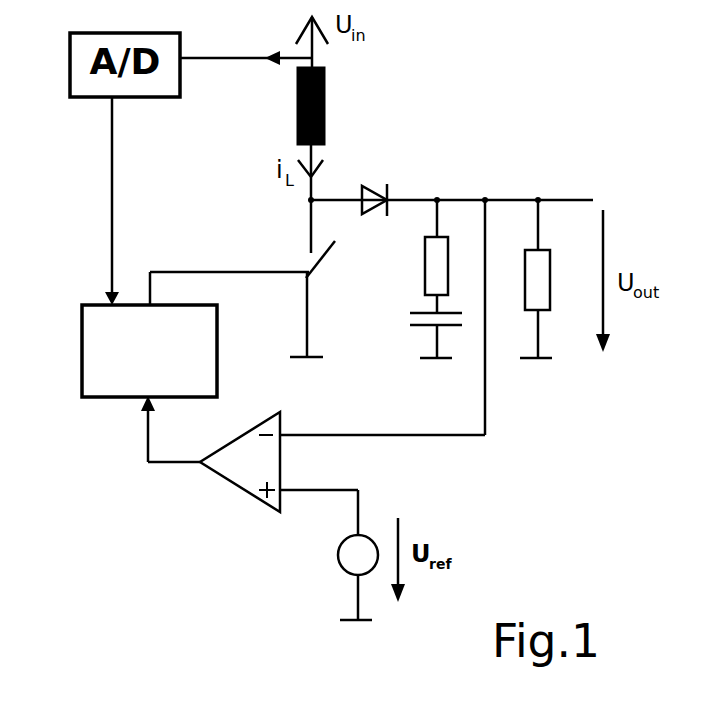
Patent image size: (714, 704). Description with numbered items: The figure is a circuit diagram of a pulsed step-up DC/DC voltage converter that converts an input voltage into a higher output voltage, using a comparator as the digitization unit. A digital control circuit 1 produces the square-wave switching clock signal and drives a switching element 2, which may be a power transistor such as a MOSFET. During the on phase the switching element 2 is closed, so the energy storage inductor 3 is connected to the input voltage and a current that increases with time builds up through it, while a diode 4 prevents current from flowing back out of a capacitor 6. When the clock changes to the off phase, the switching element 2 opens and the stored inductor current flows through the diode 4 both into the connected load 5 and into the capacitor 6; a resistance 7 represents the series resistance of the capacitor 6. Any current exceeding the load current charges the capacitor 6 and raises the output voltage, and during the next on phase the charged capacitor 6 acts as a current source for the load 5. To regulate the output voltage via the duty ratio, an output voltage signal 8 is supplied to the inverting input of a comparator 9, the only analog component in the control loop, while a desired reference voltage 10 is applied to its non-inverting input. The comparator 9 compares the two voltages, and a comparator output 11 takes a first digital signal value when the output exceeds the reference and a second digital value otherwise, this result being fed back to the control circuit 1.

The digital control circuit 1 is at (156, 392).
The switching element 2 is at (318, 286).
The energy storage inductor 3 is at (325, 104).
The diode 4 is at (385, 189).
The load 5 is at (550, 285).
The capacitor 6 is at (420, 334).
The resistance 7 is at (425, 264).
The output voltage signal 8 is at (515, 200).
The comparator 9 is at (245, 468).
The reference voltage 10 is at (346, 490).
The comparator output 11 is at (186, 463).